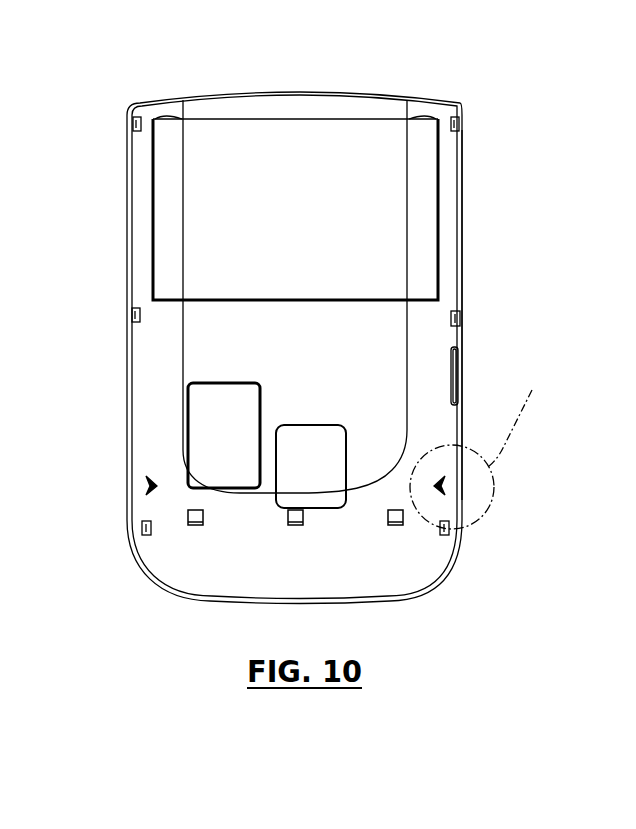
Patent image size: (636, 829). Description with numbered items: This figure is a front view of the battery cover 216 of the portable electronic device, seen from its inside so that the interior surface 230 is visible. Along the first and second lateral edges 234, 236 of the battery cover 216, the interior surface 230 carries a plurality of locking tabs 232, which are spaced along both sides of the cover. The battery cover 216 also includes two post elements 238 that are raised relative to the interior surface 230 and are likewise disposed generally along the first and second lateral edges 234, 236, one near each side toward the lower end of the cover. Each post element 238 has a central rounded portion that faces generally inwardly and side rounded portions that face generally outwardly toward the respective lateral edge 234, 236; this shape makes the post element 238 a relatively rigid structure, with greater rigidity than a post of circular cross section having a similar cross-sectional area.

The battery cover 216 is at (317, 315).
The interior surface 230 is at (422, 204).
The locking tabs 232 is at (131, 124).
The first lateral edge 234 is at (127, 228).
The second lateral edge 236 is at (463, 148).
The post elements 238 is at (146, 472).